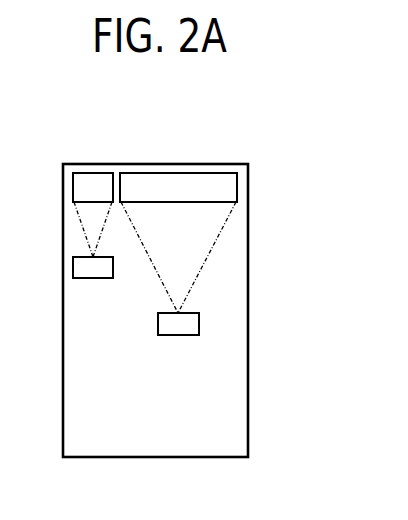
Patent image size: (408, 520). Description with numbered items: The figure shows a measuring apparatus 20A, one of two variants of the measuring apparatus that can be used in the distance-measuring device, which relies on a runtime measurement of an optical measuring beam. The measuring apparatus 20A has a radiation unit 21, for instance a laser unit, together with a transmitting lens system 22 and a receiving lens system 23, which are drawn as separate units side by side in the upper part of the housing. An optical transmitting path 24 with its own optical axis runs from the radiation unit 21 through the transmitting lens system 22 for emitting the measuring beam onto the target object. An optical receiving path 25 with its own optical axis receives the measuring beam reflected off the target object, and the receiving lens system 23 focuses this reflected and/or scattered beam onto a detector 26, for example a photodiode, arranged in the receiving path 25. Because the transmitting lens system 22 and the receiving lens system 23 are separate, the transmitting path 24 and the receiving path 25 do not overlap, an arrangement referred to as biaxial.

The measuring apparatus 20A is at (137, 164).
The radiation unit 21 is at (73, 268).
The transmitting lens system 22 is at (73, 185).
The receiving lens system 23 is at (237, 187).
The optical transmitting path 24 is at (88, 226).
The optical receiving path 25 is at (205, 240).
The detector 26 is at (199, 325).